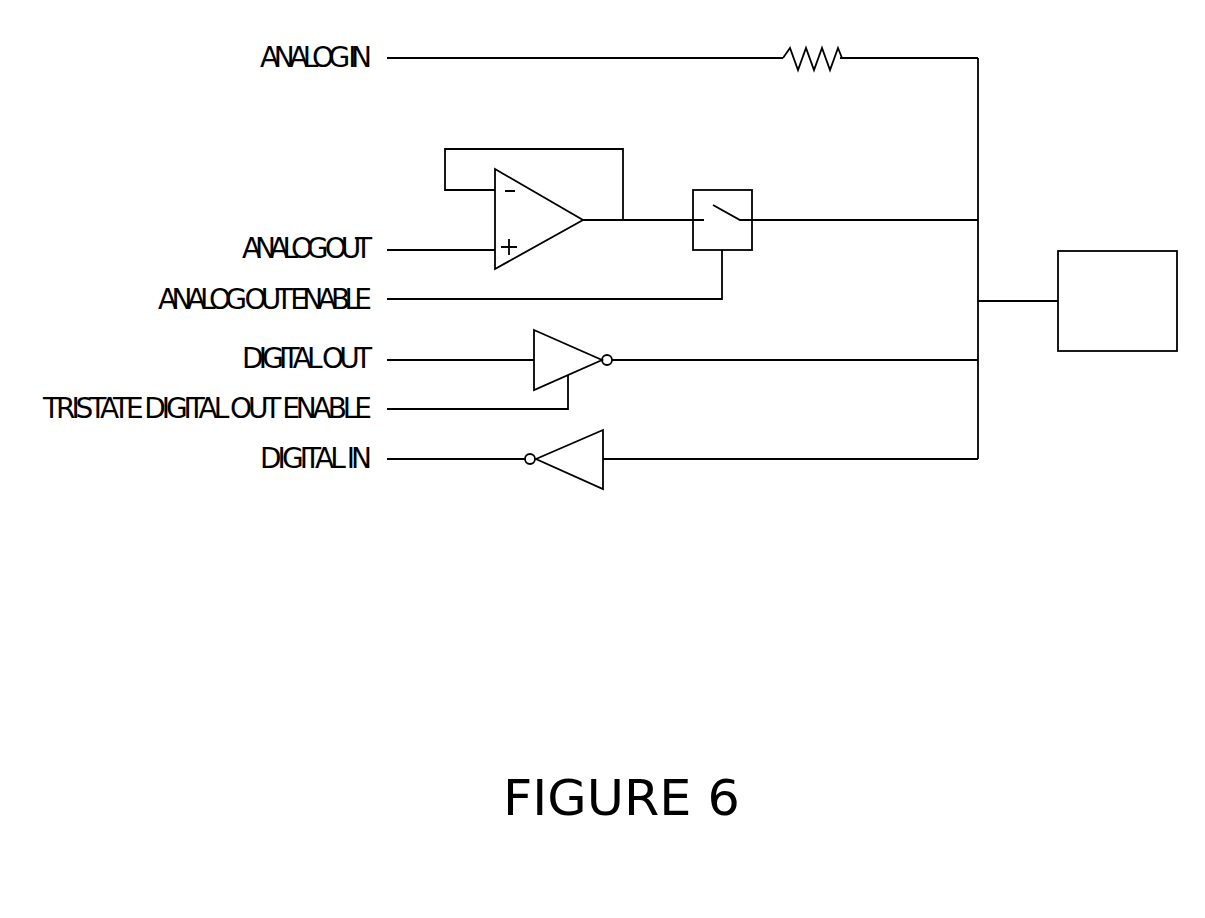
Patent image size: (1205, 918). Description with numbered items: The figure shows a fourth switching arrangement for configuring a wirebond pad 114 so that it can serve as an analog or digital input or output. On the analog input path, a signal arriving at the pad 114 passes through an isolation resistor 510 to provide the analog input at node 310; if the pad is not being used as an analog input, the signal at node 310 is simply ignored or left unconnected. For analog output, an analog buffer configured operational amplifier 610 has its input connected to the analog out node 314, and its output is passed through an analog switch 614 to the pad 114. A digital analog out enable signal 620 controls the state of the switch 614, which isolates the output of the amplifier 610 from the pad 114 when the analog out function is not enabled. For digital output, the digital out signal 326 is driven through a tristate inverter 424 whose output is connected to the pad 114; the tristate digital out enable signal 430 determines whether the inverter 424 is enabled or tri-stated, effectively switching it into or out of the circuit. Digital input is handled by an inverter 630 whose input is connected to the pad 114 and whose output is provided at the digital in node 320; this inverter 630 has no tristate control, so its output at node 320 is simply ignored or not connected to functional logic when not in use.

The pad 114 is at (1134, 332).
The analog in node 310 is at (505, 58).
The isolation resistor 510 is at (820, 48).
The analog buffer configured operational amplifier 610 is at (537, 192).
The analog switch 614 is at (700, 190).
The analog out node 314 is at (417, 250).
The analog out enable signal 620 is at (405, 299).
The digital out signal 326 is at (405, 360).
The tristate inverter 424 is at (573, 345).
The tristate digital out enable signal 430 is at (405, 409).
The inverter 630 is at (592, 432).
The digital in node 320 is at (405, 459).